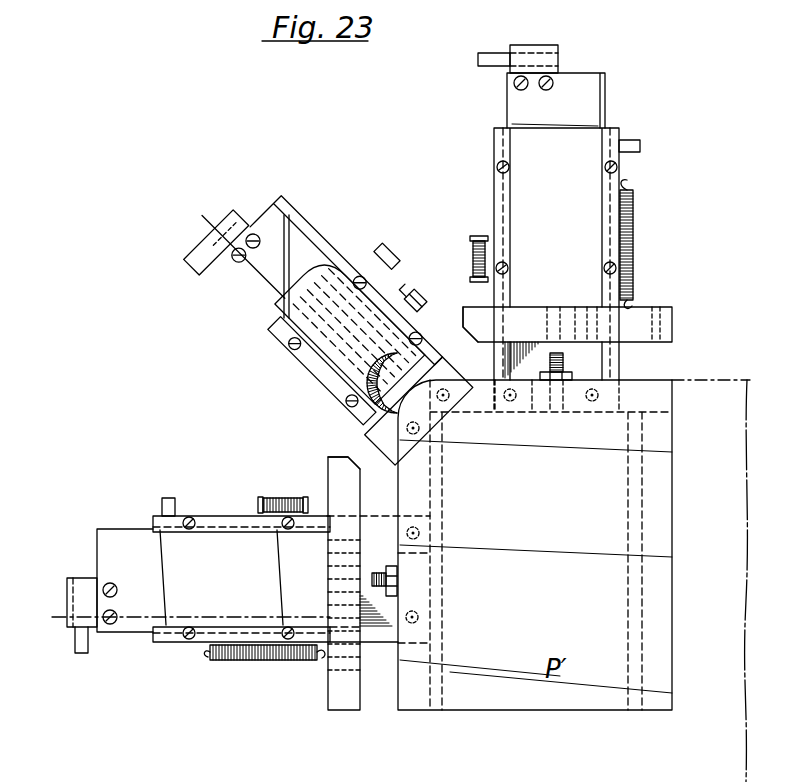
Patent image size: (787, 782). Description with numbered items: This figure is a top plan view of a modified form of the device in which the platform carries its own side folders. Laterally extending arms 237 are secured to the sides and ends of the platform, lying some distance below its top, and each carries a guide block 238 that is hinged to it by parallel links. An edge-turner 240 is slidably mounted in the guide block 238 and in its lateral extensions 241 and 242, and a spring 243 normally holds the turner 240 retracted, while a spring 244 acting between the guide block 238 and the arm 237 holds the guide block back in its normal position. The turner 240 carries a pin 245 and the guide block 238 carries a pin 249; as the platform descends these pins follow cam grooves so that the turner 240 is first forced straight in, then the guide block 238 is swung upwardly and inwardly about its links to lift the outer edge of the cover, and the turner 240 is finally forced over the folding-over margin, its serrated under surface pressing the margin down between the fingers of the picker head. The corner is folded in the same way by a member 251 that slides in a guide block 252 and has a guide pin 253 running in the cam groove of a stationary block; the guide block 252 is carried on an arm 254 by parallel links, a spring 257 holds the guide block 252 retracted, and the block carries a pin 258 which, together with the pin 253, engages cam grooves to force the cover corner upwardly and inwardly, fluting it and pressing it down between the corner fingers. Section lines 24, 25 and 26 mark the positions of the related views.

The section line 24 is at (388, 750).
The section line 25 is at (470, 466).
The section line 26 is at (460, 643).
The laterally extending arm 237 is at (613, 363).
The guide block 238 is at (612, 193).
The edge-turner 240 is at (573, 262).
The lateral extension 241 is at (478, 317).
The lateral extension 242 is at (667, 319).
The spring 243 is at (633, 227).
The spring 244 is at (472, 257).
The pin 245 is at (493, 66).
The pin 249 is at (640, 146).
The corner-folding member 251 is at (277, 300).
The guide block 252 is at (281, 333).
The guide pin 253 is at (199, 268).
The arm 254 is at (392, 431).
The spring 257 is at (440, 277).
The pin 258 is at (408, 230).